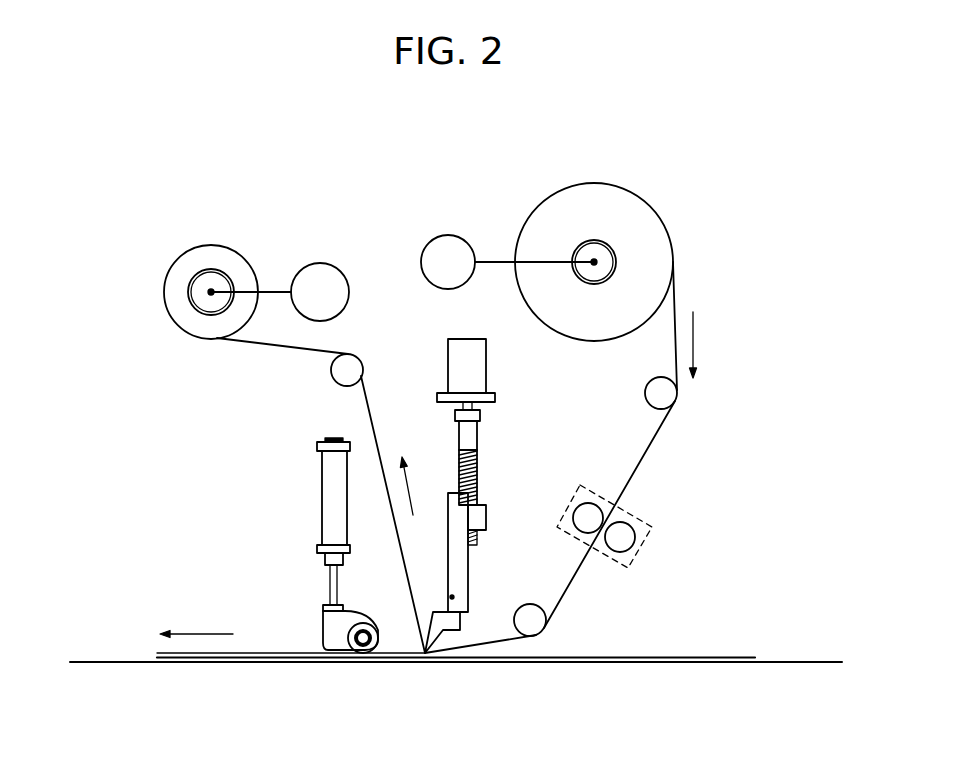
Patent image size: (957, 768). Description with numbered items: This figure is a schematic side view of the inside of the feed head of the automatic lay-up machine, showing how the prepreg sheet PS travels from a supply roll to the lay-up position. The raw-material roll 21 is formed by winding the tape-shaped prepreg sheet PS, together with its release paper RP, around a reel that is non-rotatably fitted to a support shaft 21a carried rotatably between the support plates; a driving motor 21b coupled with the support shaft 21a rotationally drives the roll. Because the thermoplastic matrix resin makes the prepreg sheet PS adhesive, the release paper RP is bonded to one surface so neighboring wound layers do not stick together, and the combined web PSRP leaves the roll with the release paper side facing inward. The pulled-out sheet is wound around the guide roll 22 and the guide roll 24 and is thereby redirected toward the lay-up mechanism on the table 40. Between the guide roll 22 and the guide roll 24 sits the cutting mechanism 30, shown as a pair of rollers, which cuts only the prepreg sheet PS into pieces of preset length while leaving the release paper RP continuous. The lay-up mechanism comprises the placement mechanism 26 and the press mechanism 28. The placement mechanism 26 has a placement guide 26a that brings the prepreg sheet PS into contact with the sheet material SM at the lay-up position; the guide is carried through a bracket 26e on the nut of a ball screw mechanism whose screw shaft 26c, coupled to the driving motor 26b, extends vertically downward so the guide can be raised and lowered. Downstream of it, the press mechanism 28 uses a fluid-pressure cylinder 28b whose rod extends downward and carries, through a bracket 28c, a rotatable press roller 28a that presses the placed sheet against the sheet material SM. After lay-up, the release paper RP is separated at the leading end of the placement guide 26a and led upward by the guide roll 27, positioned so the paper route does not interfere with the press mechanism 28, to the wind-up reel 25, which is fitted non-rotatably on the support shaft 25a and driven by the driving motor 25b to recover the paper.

The raw-material roll 21 is at (632, 212).
The support shaft 21a is at (605, 266).
The driving motor 21b is at (447, 240).
The guide roll 22 is at (673, 395).
The guide roll 24 is at (545, 625).
The wind-up reel 25 is at (212, 297).
The support shaft 25a is at (203, 300).
The driving motor 25b is at (330, 264).
The placement mechanism 26 is at (499, 537).
The placement guide 26a is at (440, 622).
The driving motor 26b is at (476, 378).
The screw shaft 26c is at (462, 467).
The bracket 26e is at (458, 570).
The guide roll 27 is at (340, 372).
The press mechanism 28 is at (317, 573).
The press roller 28a is at (375, 640).
The fluid-pressure cylinder 28b is at (334, 500).
The bracket 28c is at (335, 632).
The cutting mechanism 30 is at (660, 548).
The table 40 is at (808, 662).
The sheet material SM is at (700, 657).
The prepreg sheet PS is at (270, 653).
The release paper RP is at (397, 392).
The adhesive sheet with release paper PSRP is at (648, 455).